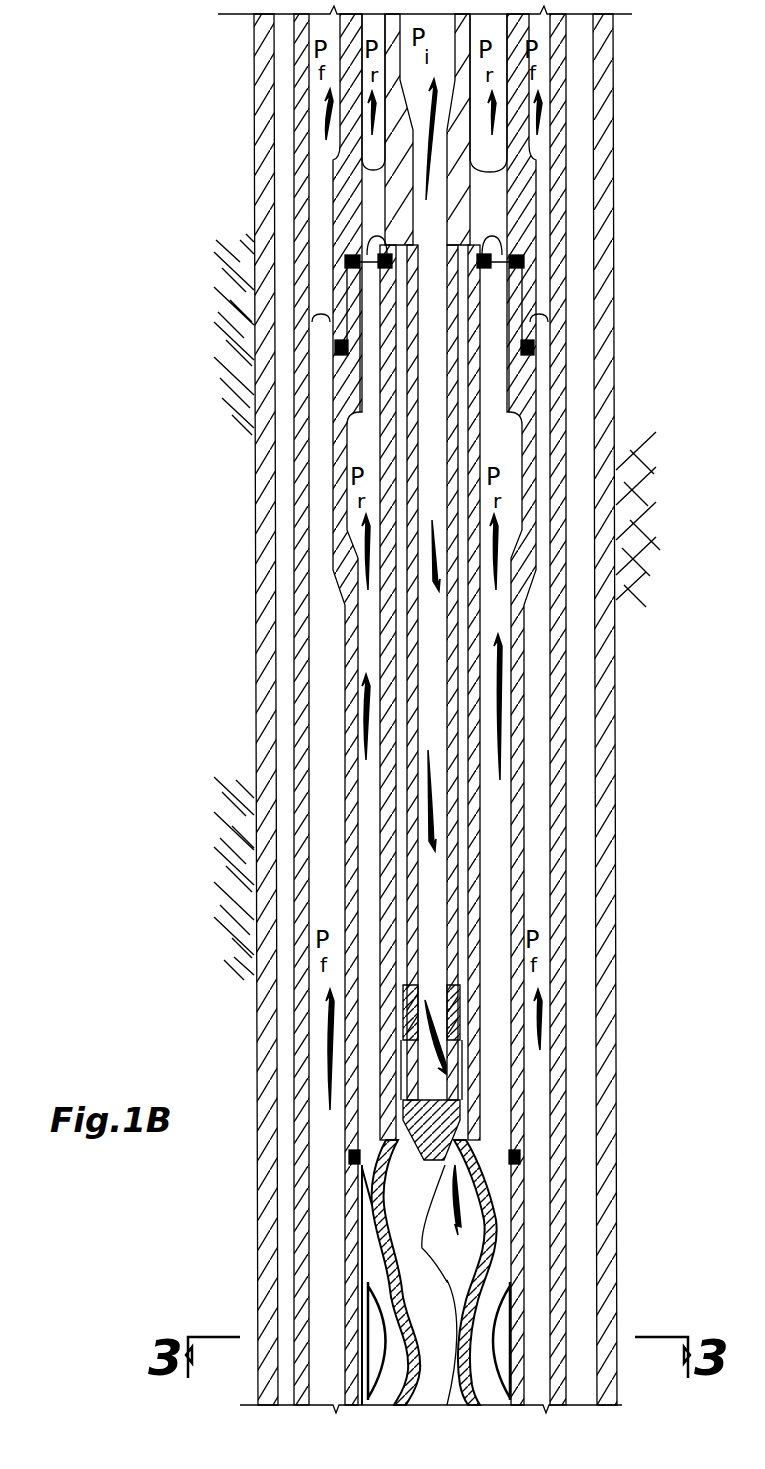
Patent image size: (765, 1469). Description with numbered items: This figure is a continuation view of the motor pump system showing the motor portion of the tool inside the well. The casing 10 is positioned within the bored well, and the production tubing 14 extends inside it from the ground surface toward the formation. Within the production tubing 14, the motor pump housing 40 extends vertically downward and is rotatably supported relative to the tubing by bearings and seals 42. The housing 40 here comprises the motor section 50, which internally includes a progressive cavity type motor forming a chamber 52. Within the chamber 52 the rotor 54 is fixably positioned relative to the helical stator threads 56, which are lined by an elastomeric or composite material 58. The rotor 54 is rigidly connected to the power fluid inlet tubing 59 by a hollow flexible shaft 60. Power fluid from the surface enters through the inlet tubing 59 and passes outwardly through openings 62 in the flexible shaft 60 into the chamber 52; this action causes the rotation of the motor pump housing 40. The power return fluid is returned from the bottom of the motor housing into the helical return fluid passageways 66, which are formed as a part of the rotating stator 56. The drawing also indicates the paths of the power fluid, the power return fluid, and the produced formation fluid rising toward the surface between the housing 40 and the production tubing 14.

The casing 10 is at (604, 62).
The production tubing 14 is at (556, 432).
The motor pump housing 40 is at (510, 640).
The bearings and seals 42 is at (482, 242).
The power fluid inlet tubing 59 is at (478, 140).
The hollow flexible shaft 60 is at (452, 720).
The openings 62 is at (455, 1065).
The motor section 50 is at (230, 1270).
The chamber 52 is at (498, 1215).
The rotor 54 is at (370, 1330).
The helical stator threads 56 is at (375, 1212).
The elastomeric or composite material 58 is at (490, 1245).
The helical return fluid passageways 66 is at (498, 1325).